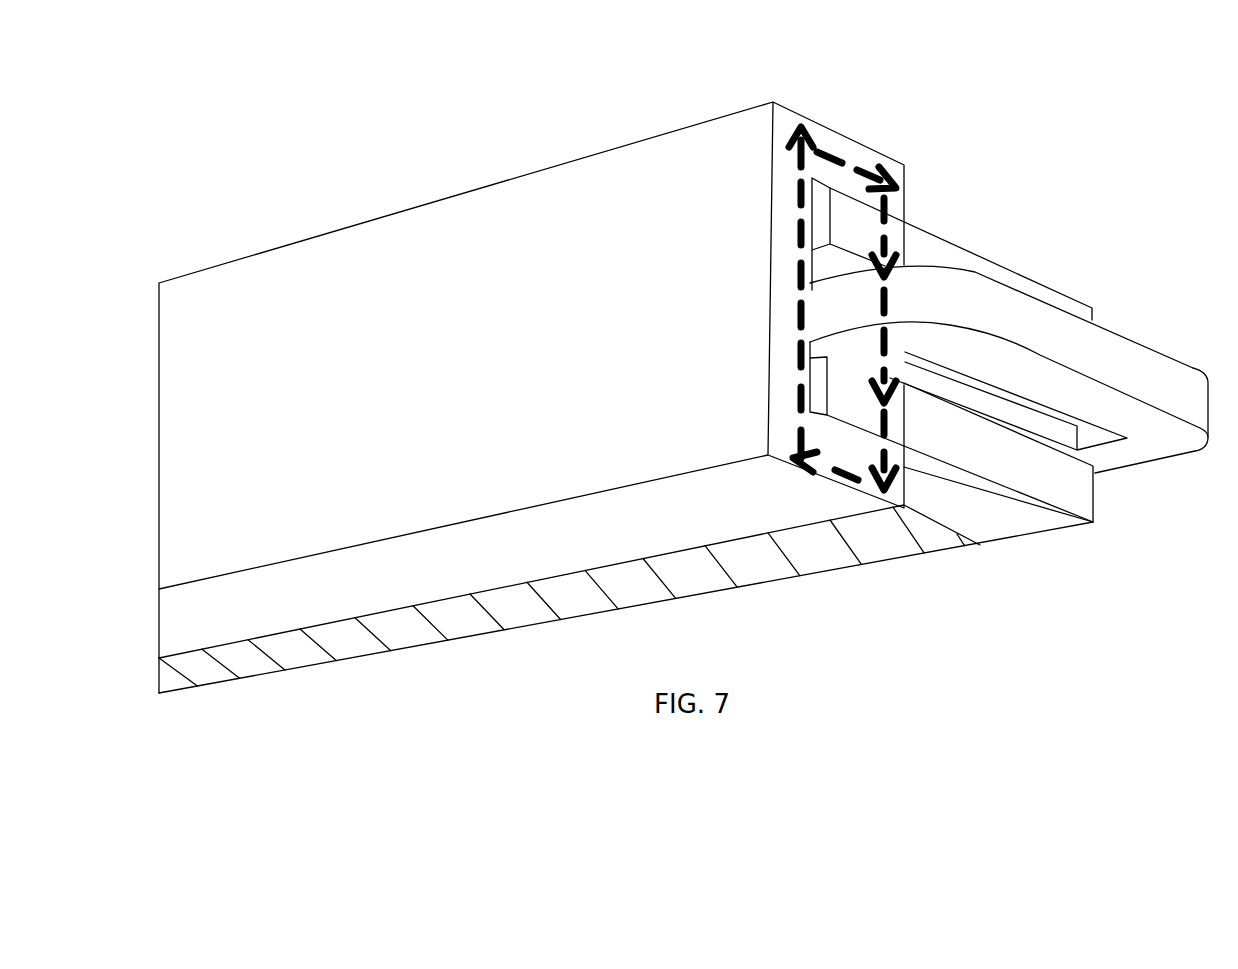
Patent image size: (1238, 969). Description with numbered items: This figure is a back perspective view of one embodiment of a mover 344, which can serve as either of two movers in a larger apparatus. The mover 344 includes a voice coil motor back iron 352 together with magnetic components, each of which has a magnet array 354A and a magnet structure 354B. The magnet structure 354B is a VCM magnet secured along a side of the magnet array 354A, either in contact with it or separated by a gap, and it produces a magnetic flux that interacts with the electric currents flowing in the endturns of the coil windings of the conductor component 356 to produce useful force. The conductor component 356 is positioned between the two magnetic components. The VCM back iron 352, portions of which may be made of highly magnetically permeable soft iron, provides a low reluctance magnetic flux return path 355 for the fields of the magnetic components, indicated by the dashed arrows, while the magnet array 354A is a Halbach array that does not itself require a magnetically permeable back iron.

The mover 344 is at (291, 126).
The VCM back iron 352 is at (480, 237).
The magnet array 354A is at (962, 260).
The magnet structure 354B is at (897, 233).
The magnetic flux return path 355 is at (868, 172).
The conductor component 356 is at (1175, 430).